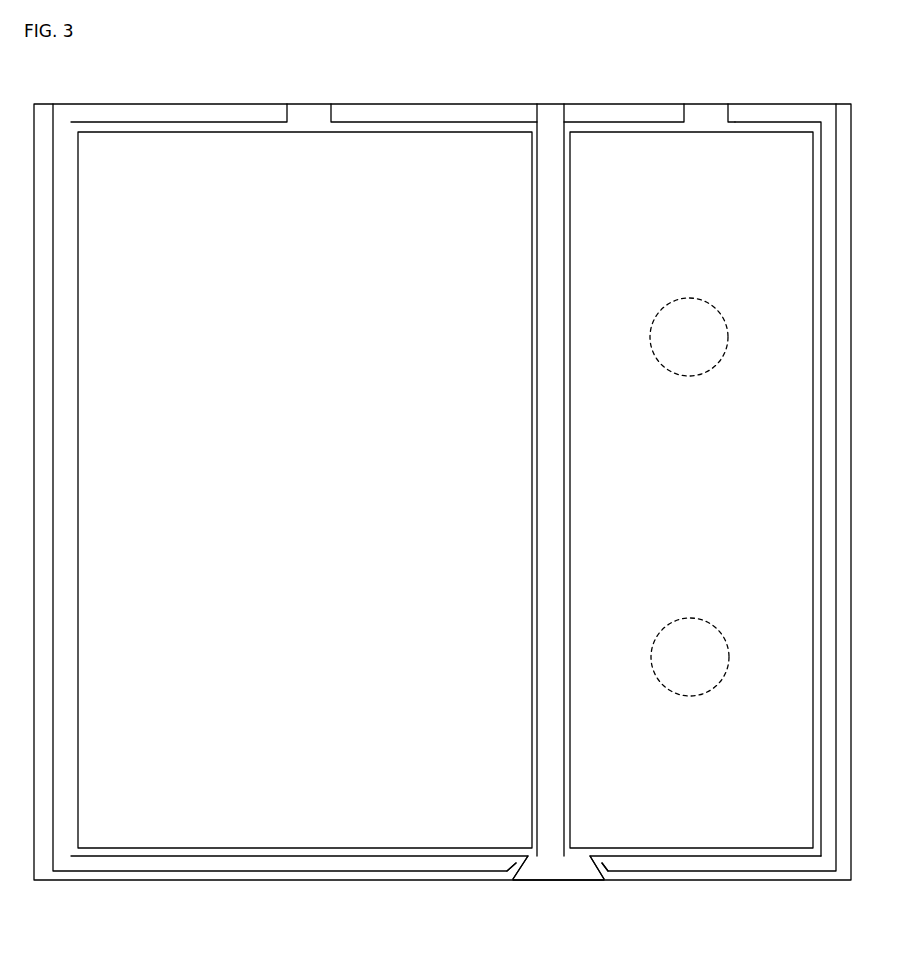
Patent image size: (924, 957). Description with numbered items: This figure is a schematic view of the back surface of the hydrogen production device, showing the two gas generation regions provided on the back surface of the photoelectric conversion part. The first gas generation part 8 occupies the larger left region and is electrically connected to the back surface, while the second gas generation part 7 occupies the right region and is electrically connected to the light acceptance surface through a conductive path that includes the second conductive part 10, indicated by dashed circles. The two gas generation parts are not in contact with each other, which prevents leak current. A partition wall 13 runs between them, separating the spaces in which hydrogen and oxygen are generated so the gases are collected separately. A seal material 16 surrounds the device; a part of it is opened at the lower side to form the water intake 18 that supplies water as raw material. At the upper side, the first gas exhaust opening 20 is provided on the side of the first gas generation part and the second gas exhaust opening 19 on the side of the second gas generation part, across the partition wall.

The second gas generation part 7 is at (788, 467).
The first gas generation part 8 is at (108, 461).
The second conductive part 10 is at (707, 343).
The partition wall 13 is at (545, 117).
The seal material 16 is at (747, 115).
The water intake 18 is at (555, 865).
The second gas exhaust opening 19 is at (700, 117).
The first gas exhaust opening 20 is at (305, 117).